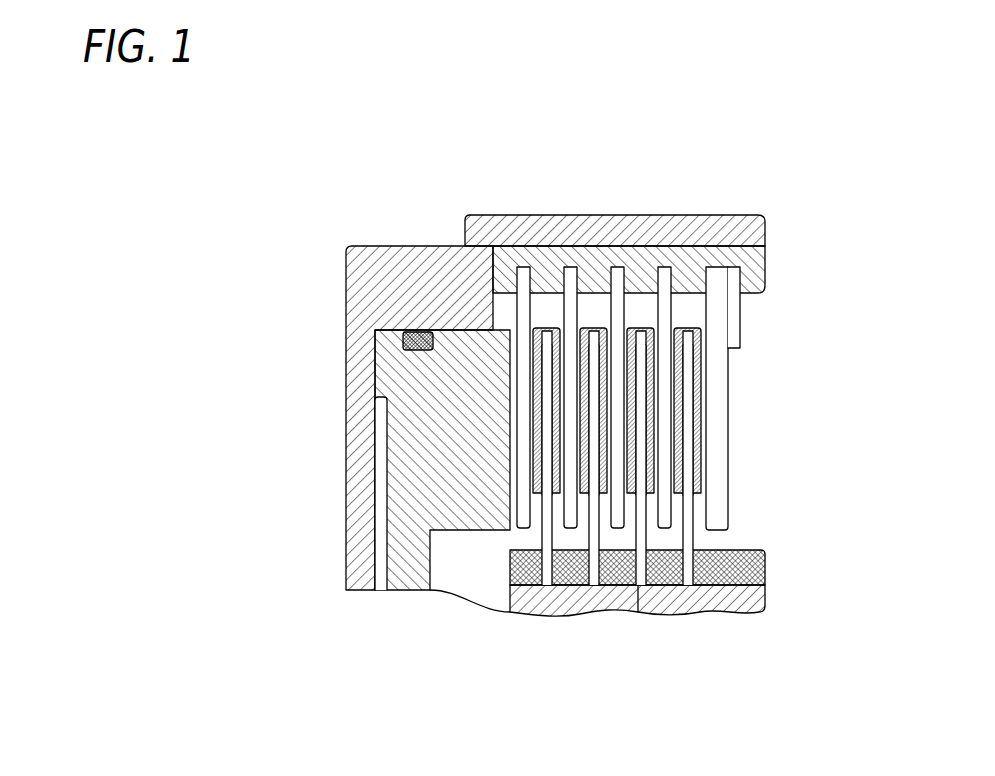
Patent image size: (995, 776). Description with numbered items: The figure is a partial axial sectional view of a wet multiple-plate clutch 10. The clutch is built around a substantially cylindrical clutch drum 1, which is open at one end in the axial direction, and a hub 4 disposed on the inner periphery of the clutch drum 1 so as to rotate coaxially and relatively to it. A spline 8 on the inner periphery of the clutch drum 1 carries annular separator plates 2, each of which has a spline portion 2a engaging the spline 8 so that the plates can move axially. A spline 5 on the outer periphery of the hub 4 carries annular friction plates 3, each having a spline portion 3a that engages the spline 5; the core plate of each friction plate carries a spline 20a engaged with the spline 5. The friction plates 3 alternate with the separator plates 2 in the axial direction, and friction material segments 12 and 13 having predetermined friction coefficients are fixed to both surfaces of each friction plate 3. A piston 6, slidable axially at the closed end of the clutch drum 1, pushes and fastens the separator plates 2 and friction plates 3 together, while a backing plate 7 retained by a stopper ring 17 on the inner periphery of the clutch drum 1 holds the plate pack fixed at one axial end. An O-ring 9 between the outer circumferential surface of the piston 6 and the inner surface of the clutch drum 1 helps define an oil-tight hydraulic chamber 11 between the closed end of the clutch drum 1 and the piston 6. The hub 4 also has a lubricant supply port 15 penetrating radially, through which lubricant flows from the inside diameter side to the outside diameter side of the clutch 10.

The clutch drum 1 is at (544, 218).
The separator plates 2 is at (612, 392).
The spline portion 2a is at (617, 267).
The friction plates 3 is at (629, 498).
The spline portion 3a is at (639, 536).
The hub 4 is at (650, 651).
The spline 5 is at (748, 562).
The piston 6 is at (413, 393).
The backing plate 7 is at (725, 392).
The spline 8 is at (757, 252).
The O-ring 9 is at (418, 330).
The wet multiple-plate clutch 10 is at (749, 199).
The hydraulic chamber 11 is at (373, 495).
The friction material segments 12 is at (543, 472).
The friction material segments 13 is at (563, 490).
The lubricant supply port 15 is at (640, 608).
The stopper ring 17 is at (733, 317).
The spline 20a is at (686, 584).